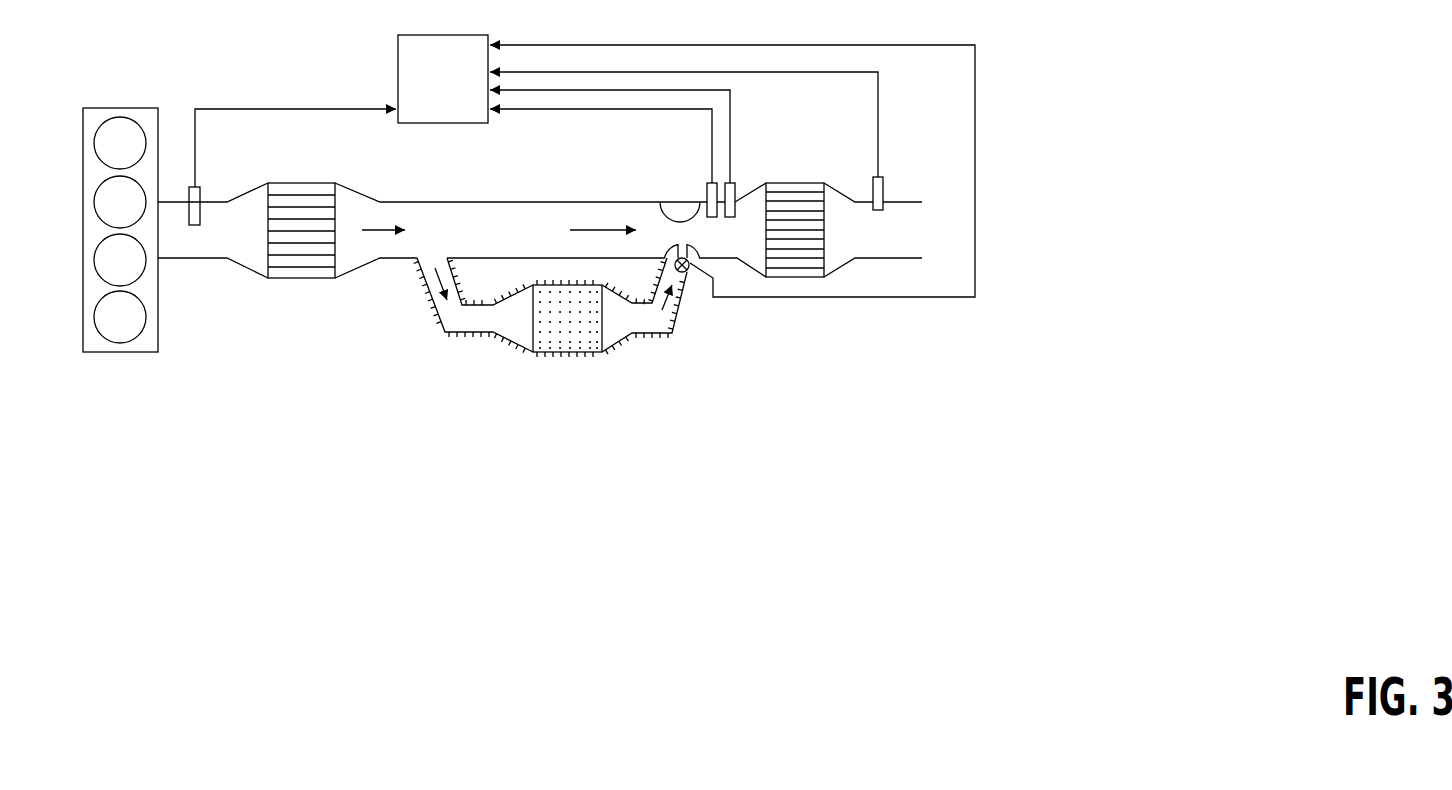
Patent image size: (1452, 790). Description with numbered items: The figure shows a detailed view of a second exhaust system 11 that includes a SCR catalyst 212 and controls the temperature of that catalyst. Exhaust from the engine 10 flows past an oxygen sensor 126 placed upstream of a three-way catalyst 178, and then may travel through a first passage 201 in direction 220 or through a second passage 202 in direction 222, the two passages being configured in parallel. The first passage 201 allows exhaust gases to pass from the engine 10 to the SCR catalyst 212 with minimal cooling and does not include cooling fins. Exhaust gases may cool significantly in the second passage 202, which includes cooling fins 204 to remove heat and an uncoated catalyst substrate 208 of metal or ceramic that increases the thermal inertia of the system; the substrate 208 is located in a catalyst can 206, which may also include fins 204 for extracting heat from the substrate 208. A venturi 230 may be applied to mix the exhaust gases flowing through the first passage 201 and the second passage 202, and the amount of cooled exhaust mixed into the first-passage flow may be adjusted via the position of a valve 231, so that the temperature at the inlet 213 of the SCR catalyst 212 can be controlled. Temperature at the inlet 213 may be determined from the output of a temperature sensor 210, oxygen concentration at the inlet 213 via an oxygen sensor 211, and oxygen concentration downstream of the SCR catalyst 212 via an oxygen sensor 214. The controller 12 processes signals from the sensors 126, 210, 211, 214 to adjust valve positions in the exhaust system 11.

The engine 10 is at (122, 108).
The exhaust system 11 is at (250, 322).
The controller 12 is at (443, 79).
The oxygen sensor 126 is at (198, 187).
The three-way catalyst 178 is at (283, 183).
The first passage 201 is at (524, 188).
The second passage 202 is at (435, 315).
The cooling fins 204 is at (443, 333).
The catalyst can 206 is at (526, 353).
The uncoated catalyst substrate 208 is at (571, 293).
The temperature sensor 210 is at (707, 183).
The oxygen sensor 211 is at (732, 183).
The SCR catalyst 212 is at (800, 195).
The inlet 213 is at (746, 243).
The oxygen sensor 214 is at (883, 178).
The direction 220 is at (586, 215).
The direction 222 is at (427, 288).
The venturi 230 is at (658, 222).
The valve 231 is at (694, 272).